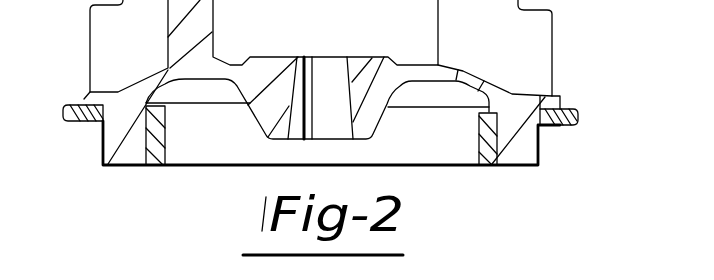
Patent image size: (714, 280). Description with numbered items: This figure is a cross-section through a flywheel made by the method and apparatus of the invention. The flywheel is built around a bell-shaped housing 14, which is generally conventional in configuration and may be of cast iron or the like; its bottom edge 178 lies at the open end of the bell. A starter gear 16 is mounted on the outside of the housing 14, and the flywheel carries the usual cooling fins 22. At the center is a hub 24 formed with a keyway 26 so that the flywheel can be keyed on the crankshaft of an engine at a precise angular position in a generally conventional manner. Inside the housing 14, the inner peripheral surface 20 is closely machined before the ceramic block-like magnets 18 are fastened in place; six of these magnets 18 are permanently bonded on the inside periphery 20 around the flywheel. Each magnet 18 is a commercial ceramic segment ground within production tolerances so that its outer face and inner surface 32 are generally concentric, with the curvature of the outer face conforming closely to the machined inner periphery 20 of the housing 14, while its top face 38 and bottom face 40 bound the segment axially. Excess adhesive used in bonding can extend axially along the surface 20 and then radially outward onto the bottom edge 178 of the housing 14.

The bell-shaped housing 14 is at (104, 148).
The starter gear 16 is at (580, 116).
The ceramic block-like magnets 18 is at (478, 148).
The inner peripheral surface 20 is at (485, 166).
The cooling fins 22 is at (540, 51).
The hub 24 is at (400, 27).
The keyway 26 is at (297, 58).
The inner surface 32 is at (165, 146).
The top face 38 is at (165, 110).
The bottom face 40 is at (158, 165).
The bottom edge 178 is at (137, 165).